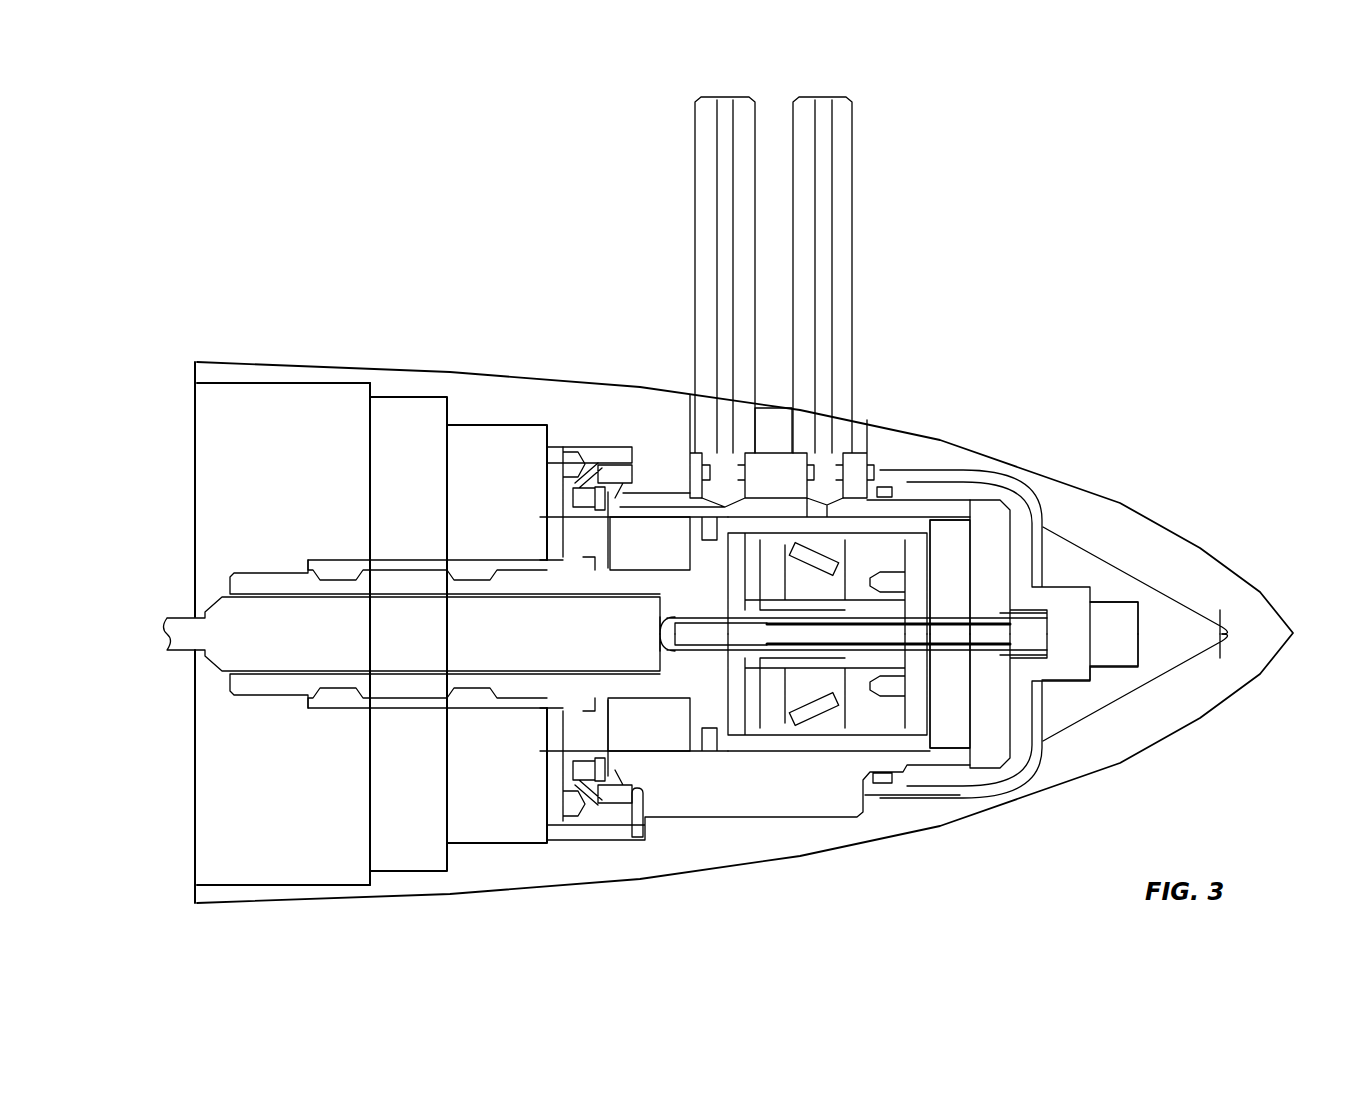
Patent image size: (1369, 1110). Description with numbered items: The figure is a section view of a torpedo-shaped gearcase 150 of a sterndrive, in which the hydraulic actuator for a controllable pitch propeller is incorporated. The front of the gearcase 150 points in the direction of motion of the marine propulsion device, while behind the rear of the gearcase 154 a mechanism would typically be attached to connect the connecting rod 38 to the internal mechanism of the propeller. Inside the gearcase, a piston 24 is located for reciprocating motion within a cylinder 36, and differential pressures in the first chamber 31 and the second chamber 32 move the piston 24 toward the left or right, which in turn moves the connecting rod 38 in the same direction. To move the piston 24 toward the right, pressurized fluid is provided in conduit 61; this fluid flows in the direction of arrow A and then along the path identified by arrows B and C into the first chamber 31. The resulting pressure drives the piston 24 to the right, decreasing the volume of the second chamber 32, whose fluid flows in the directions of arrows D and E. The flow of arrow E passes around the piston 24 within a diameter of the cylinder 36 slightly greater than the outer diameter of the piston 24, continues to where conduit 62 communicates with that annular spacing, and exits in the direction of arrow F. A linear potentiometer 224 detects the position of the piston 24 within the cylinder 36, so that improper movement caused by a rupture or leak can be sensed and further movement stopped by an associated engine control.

The gearcase 150 is at (1293, 633).
The rear of the gearcase 154 is at (195, 410).
The connecting rod 38 is at (222, 652).
The conduit 61 is at (695, 212).
The conduit 62 is at (852, 226).
The piston 24 is at (895, 523).
The first chamber 31 is at (664, 558).
The second chamber 32 is at (965, 582).
The cylinder 36 is at (673, 745).
The linear potentiometer 224 is at (1117, 614).
The arrow A is at (727, 43).
The arrow F is at (815, 62).
The arrow B is at (693, 498).
The arrow C is at (617, 503).
The arrow D is at (944, 510).
The arrow E is at (887, 515).